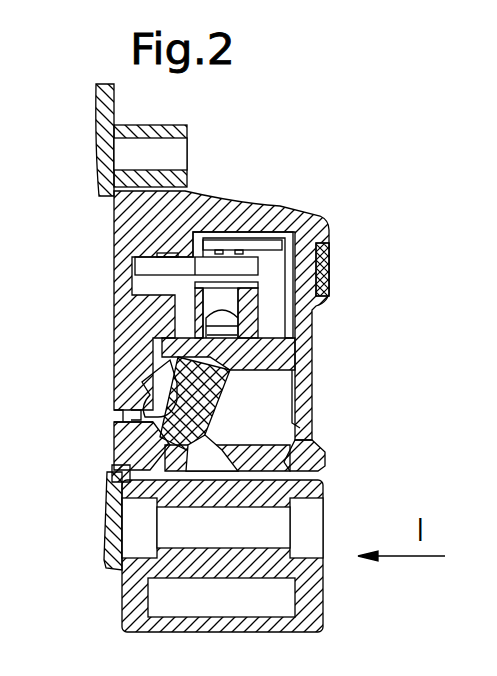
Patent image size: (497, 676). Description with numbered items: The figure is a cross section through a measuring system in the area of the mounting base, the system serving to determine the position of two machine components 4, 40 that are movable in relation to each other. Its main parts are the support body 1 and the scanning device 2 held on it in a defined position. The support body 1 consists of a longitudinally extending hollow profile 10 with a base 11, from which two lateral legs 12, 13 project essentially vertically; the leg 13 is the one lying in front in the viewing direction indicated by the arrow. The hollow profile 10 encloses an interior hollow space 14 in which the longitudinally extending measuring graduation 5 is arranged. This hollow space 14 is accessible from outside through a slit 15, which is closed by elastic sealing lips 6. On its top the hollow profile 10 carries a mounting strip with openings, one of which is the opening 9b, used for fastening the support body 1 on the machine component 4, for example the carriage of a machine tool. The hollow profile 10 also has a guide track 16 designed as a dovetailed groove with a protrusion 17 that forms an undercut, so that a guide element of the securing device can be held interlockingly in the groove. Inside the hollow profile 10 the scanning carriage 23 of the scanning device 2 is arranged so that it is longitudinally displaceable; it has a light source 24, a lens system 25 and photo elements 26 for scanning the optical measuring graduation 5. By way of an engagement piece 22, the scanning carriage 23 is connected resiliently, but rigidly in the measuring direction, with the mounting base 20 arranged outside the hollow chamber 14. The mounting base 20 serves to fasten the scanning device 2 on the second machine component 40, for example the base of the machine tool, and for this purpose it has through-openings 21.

The support body 1 is at (266, 170).
The scanning device 2 is at (118, 606).
The machine component 4 is at (100, 121).
The measuring graduation 5 is at (153, 264).
The elastic sealing lips 6 is at (157, 394).
The opening of the mounting strip 9b is at (172, 152).
The hollow profile 10 is at (300, 323).
The base 11 is at (258, 215).
The lateral leg 12 is at (145, 345).
The lateral leg 13 is at (305, 381).
The interior hollow space 14 is at (255, 381).
The slit 15 is at (150, 412).
The guide track 16 is at (281, 450).
The protrusion 17 is at (296, 483).
The mounting base 20 is at (305, 597).
The through-openings 21 is at (138, 538).
The engagement piece 22 is at (140, 453).
The scanning carriage 23 is at (322, 288).
The light source 24 is at (208, 340).
The lens system 25 is at (200, 300).
The photo elements 26 is at (318, 218).
The second machine component 40 is at (108, 506).